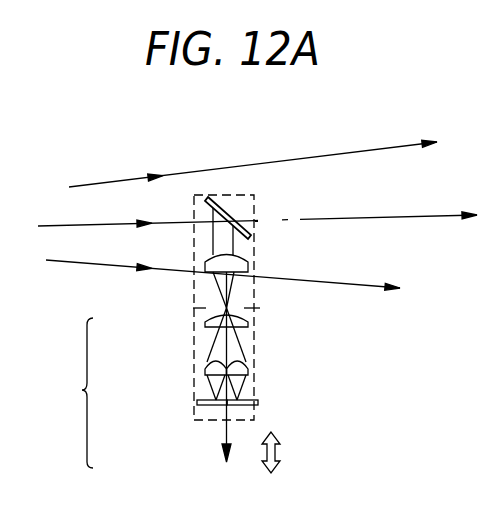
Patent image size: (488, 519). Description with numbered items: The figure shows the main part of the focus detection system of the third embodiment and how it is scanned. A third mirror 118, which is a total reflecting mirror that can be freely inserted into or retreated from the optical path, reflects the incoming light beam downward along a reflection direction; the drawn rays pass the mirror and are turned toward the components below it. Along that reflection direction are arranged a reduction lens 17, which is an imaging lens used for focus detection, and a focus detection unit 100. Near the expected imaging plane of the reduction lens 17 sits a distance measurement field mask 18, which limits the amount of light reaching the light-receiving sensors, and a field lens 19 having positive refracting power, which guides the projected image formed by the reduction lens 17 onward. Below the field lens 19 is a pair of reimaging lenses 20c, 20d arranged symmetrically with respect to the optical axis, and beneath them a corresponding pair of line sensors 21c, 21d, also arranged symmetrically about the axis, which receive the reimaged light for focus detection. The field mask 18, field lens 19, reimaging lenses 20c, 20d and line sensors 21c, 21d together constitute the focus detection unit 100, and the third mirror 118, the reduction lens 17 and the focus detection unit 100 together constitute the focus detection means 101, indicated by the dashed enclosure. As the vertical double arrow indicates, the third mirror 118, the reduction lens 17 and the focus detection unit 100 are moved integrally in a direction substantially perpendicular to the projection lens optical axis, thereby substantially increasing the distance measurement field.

The third mirror 118 is at (211, 197).
The reduction lens 17 is at (193, 272).
The distance measurement field mask 18 is at (197, 309).
The field lens 19 is at (203, 330).
The reimaging lens 20c is at (205, 373).
The reimaging lens 20d is at (253, 371).
The line sensor 21c is at (197, 406).
The line sensor 21d is at (257, 401).
The focus detection unit 100 is at (68, 393).
The focus detection means 101 is at (257, 345).